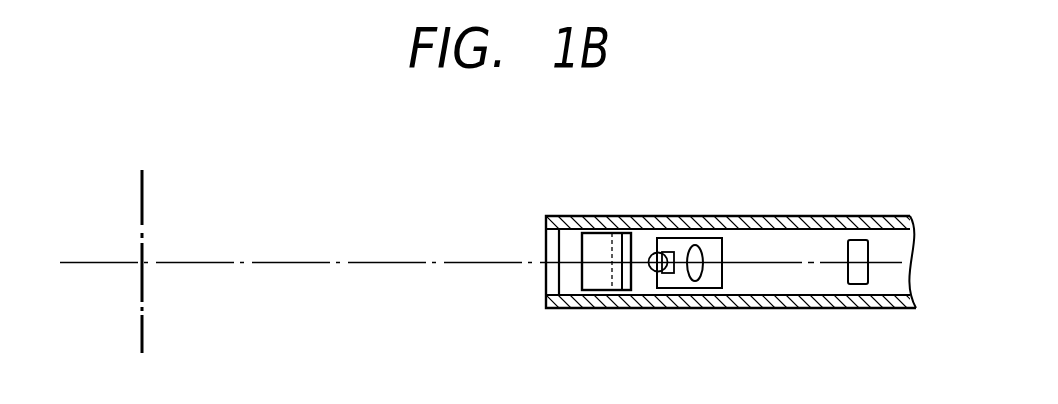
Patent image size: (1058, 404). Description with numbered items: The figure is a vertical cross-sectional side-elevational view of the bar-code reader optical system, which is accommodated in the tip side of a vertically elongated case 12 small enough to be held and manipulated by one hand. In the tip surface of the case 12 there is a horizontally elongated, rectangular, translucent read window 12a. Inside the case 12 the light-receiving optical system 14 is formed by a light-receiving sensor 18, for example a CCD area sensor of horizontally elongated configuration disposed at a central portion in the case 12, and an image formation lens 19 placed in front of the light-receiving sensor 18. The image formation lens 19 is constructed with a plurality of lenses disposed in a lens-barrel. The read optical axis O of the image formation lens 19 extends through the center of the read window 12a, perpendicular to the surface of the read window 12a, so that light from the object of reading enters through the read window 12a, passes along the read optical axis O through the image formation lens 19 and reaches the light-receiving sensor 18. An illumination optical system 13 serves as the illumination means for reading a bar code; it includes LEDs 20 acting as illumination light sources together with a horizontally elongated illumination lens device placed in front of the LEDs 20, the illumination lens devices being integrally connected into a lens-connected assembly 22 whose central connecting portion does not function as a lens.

The case 12 is at (792, 310).
The read window 12a is at (546, 276).
The illumination optical system 13 is at (637, 245).
The light-receiving optical system 14 is at (818, 258).
The light-receiving sensor 18 is at (857, 285).
The image formation lens 19 is at (703, 282).
The LED 20 is at (652, 270).
The lens unit 22 is at (618, 226).
The read optical axis O is at (272, 259).